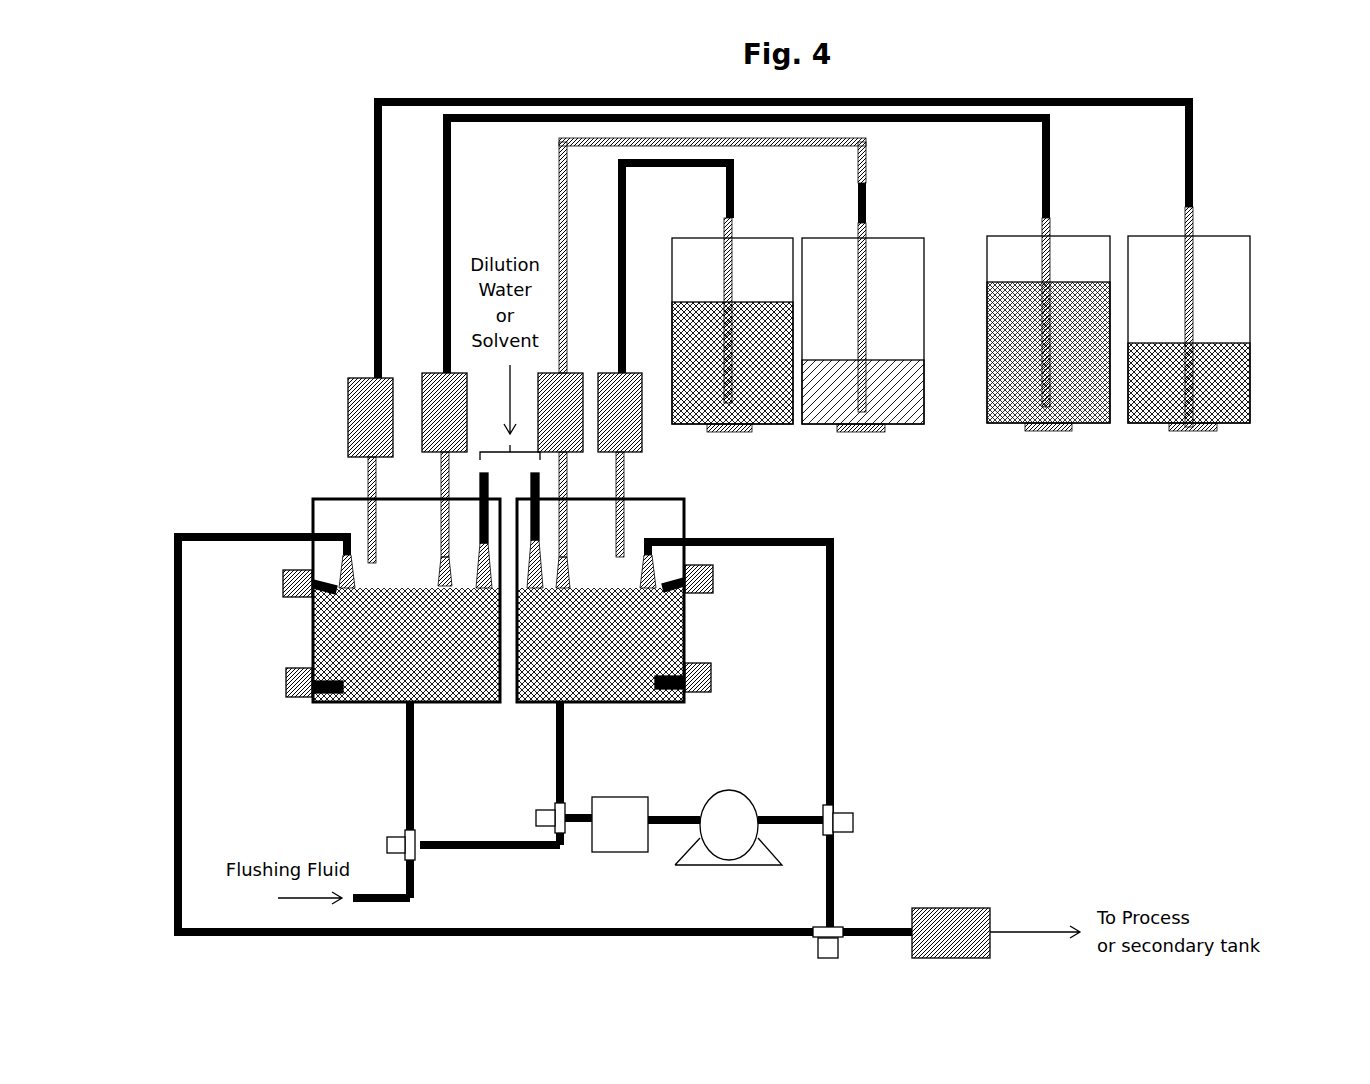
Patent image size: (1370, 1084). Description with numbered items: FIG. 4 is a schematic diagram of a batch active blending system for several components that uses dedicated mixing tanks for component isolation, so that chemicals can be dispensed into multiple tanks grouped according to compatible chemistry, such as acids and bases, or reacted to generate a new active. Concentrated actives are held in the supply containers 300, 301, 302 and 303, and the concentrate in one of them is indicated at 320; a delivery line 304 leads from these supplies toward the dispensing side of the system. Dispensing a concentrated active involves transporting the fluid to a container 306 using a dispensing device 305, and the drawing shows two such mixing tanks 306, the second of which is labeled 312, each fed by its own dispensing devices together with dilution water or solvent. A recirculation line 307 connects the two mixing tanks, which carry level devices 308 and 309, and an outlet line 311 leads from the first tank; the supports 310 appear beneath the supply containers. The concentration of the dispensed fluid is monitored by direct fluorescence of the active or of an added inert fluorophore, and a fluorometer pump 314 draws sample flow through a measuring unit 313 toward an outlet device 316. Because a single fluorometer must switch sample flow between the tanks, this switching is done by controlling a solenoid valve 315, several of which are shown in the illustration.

The first chemical tank 300 is at (753, 235).
The second chemical tank 301 is at (887, 235).
The third chemical tank 302 is at (1083, 233).
The fourth chemical tank 303 is at (1245, 334).
The chemical feed line 304 is at (418, 99).
The dispensing device 305 is at (362, 378).
The container 306 is at (322, 497).
The recirculation line 307 is at (262, 547).
The high level sensor 308 is at (282, 582).
The low level sensor 309 is at (286, 683).
The load cell 310 is at (1204, 432).
The tank outlet line 311 is at (360, 692).
The second mixing tank 312 is at (538, 703).
The flow meter 313 is at (610, 853).
The fluorometer pump 314 is at (708, 872).
The solenoid valve 315 is at (862, 820).
The filter 316 is at (947, 908).
The chemical 320 is at (1228, 365).